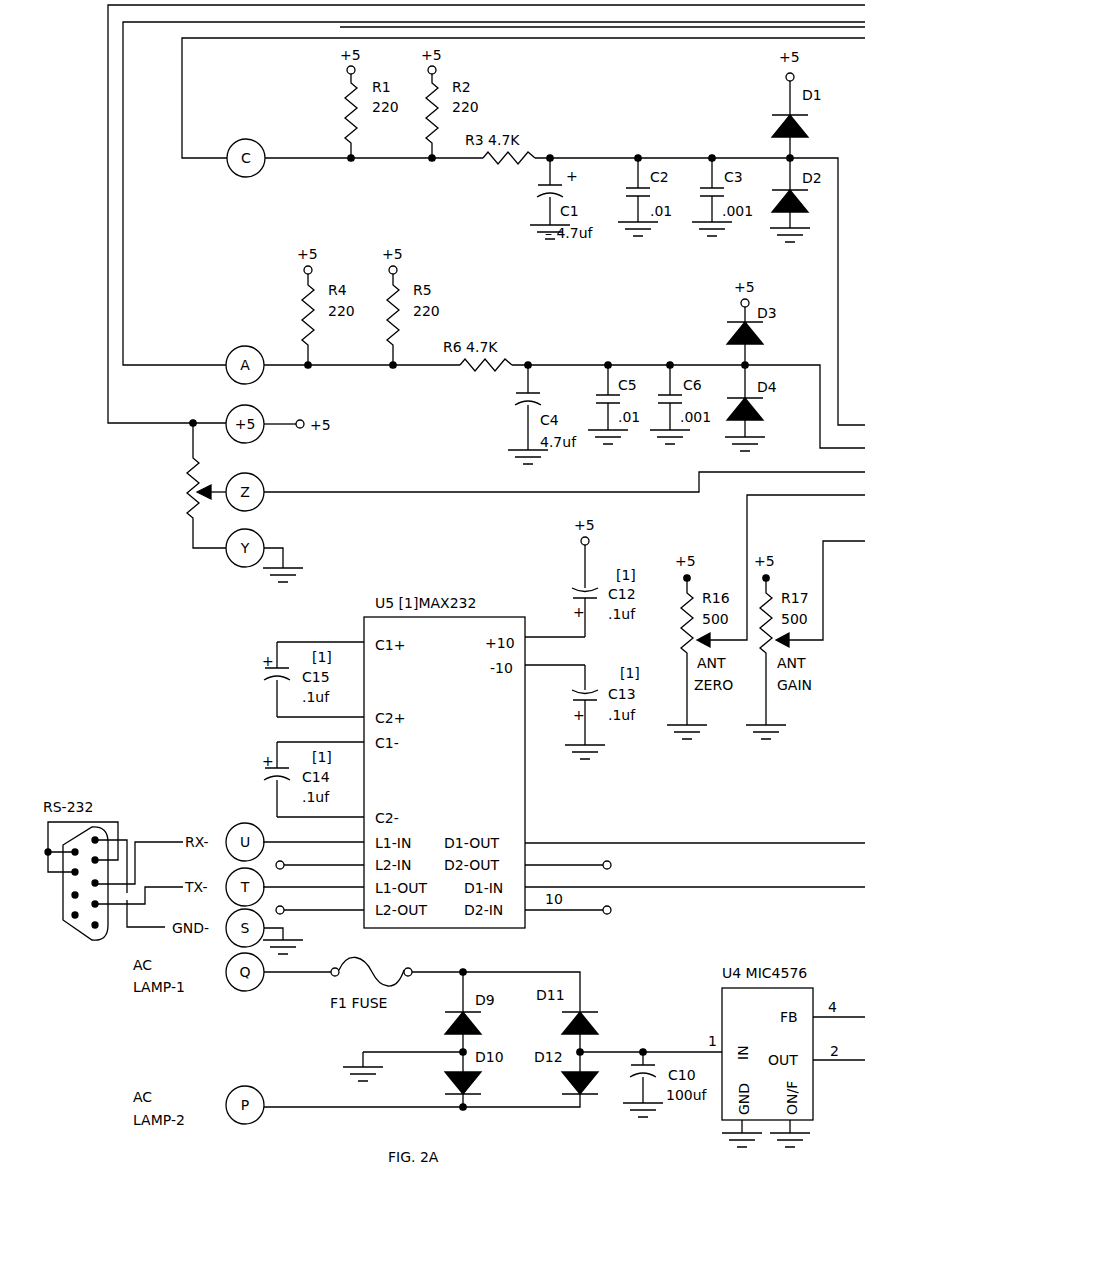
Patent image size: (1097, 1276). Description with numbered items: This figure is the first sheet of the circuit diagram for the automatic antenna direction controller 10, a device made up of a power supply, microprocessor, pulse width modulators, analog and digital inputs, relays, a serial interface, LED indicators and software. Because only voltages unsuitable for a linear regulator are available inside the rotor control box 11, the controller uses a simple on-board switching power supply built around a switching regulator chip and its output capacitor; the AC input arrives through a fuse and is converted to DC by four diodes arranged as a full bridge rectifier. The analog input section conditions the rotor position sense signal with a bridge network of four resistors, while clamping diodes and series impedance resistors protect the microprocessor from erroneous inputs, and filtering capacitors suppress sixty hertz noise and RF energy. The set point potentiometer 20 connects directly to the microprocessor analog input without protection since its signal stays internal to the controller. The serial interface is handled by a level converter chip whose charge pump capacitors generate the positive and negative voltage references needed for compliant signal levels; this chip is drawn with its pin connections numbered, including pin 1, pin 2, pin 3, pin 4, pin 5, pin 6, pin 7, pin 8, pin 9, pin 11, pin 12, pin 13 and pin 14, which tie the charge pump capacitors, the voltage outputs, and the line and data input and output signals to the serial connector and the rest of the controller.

The automatic antenna direction controller 10 is at (100, 98).
The set point potentiometer 20 is at (187, 498).
The U5 pin 1 (C1+) 1 is at (320, 633).
The U5 pin 2 (+10) 2 is at (555, 627).
The U5 pin 3 (C1-) 3 is at (320, 733).
The U5 pin 4 (C2+) 4 is at (320, 708).
The U5 pin 5 (C2-) 5 is at (320, 808).
The U5 pin 6 (-10) 6 is at (555, 656).
The U5 pin 7 (L2-OUT) 7 is at (320, 902).
The U5 pin 8 (L2-IN) 8 is at (320, 857).
The U5 pin 9 (D2-OUT) 9 is at (568, 857).
The rotor control box 11 is at (695, 878).
The U5 pin 12 (D1-OUT) 12 is at (695, 834).
The U5 pin 13 (L1-IN) 13 is at (313, 832).
The U5 pin 14 (L1-OUT) 14 is at (313, 878).